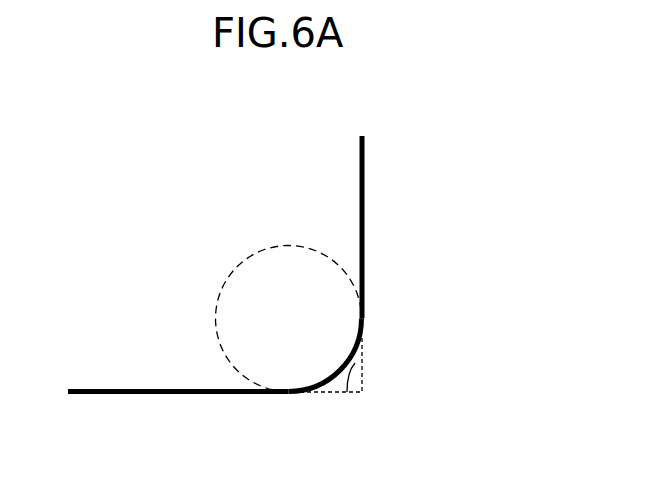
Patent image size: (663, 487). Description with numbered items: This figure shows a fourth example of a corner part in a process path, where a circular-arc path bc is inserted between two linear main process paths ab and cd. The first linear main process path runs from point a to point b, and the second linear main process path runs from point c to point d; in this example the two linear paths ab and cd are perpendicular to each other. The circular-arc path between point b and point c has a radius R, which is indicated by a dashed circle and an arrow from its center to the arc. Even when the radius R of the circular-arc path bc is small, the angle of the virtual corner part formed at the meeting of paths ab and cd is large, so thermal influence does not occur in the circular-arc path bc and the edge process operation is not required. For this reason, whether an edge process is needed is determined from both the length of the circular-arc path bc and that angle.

The start point of linear main process path ab a is at (376, 227).
The end point of linear main process path ab / start of circular-arc path bc b is at (341, 339).
The end point of circular-arc path bc / start of linear main process path cd c is at (244, 411).
The end point of linear main process path cd d is at (134, 411).
The radius of the circular-arc path bc R is at (341, 369).